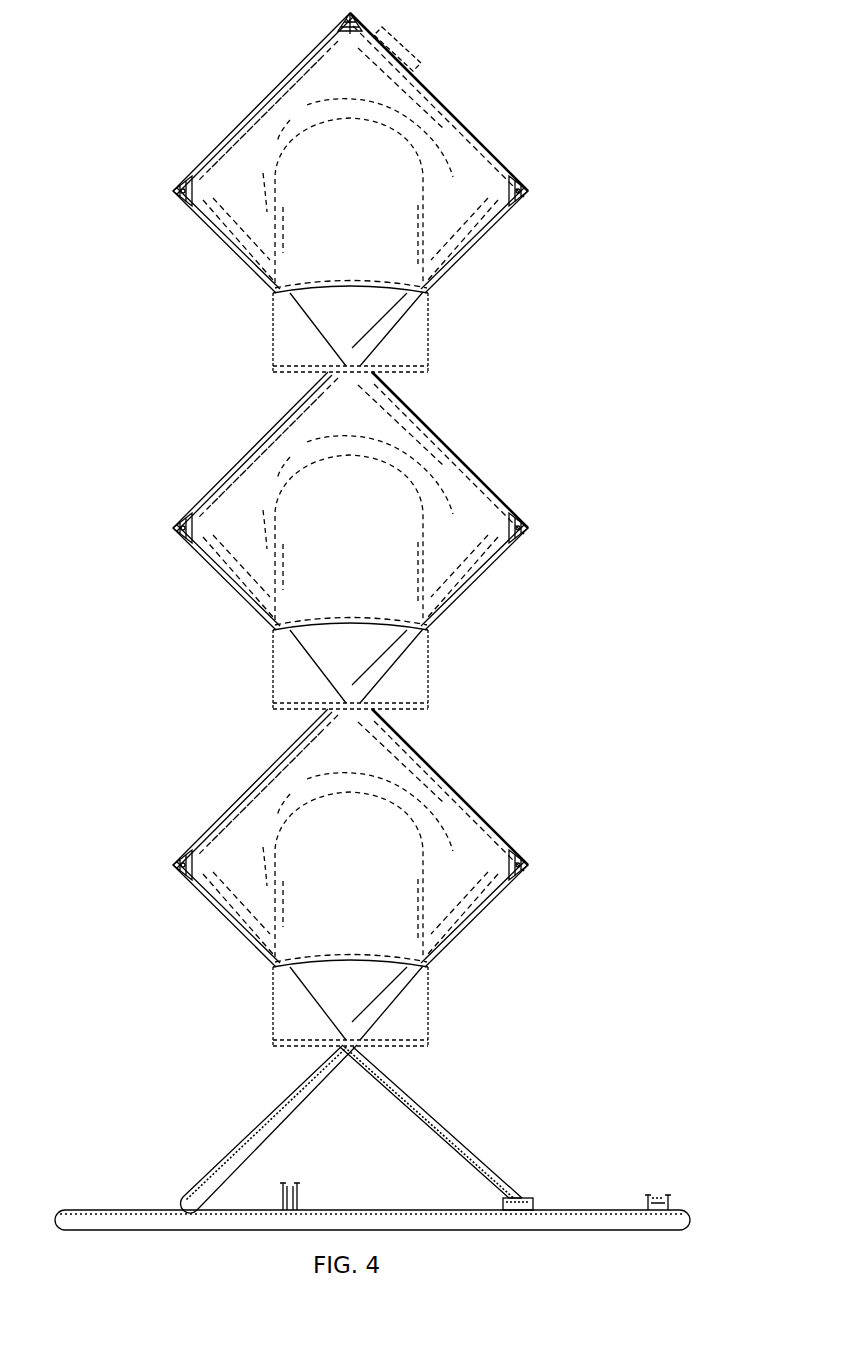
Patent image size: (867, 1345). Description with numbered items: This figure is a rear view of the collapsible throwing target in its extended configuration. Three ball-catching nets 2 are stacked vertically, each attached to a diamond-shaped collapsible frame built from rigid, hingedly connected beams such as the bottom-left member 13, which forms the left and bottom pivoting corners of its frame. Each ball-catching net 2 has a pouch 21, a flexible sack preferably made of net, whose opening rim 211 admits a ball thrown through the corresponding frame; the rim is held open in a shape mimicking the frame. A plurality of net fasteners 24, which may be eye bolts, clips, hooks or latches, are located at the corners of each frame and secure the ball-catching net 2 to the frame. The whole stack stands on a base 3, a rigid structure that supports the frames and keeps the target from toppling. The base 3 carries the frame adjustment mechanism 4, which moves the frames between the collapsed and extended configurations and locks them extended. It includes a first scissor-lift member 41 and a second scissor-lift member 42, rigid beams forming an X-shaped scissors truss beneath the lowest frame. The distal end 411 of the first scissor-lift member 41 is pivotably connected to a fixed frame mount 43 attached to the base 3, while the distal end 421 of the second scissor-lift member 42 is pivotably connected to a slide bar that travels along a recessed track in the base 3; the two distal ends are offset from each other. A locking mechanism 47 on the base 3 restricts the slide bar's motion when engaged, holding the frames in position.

The ball-catching net 2 is at (590, 191).
The opening rim 211 is at (253, 110).
The pouch 21 is at (338, 196).
The net fastener 24 is at (348, 13).
The bottom-left member 13 is at (258, 282).
The base 3 is at (403, 1216).
The frame adjustment mechanism 4 is at (733, 1037).
The first scissor-lift member 41 is at (233, 1129).
The second scissor-lift member 42 is at (447, 1122).
The distal end of the first scissor-lift member 411 is at (521, 1191).
The distal end of the second scissor-lift member 421 is at (178, 1191).
The fixed frame mount 43 is at (535, 1197).
The locking mechanism 47 is at (673, 1191).